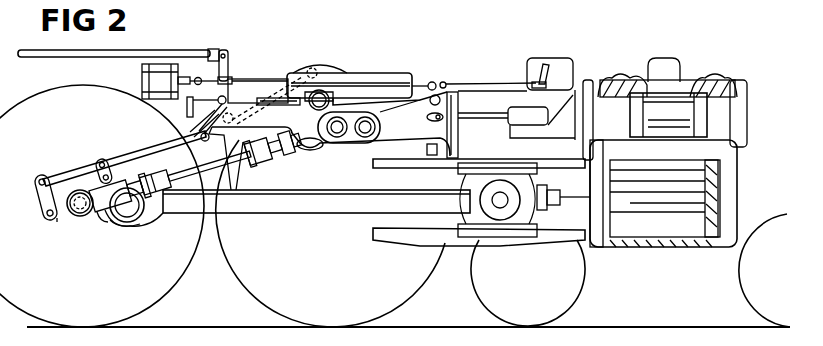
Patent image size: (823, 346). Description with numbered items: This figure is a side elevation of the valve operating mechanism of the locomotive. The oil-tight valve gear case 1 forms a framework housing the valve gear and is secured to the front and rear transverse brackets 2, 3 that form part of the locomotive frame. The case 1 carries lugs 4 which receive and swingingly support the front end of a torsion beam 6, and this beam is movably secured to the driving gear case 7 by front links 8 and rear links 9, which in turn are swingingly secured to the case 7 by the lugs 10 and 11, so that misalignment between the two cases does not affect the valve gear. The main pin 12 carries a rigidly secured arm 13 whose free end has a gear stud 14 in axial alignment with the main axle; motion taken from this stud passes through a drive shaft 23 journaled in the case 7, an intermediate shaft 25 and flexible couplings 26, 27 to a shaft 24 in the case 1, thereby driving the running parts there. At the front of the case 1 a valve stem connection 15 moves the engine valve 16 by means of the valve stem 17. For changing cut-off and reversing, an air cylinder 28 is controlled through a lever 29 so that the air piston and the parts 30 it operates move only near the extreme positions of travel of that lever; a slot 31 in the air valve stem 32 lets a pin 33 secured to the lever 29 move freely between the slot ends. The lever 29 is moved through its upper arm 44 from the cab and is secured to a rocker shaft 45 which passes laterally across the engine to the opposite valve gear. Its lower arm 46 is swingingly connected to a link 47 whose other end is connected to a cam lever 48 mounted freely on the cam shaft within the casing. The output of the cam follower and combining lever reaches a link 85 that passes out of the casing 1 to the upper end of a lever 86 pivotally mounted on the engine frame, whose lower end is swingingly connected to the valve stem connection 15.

The valve gear case 1 is at (364, 144).
The front transverse bracket 2 is at (460, 106).
The rear transverse bracket 3 is at (170, 119).
The lugs 4 is at (214, 142).
The torsion beam 6 is at (127, 154).
The driving gear case 7 is at (105, 222).
The front links 8 is at (99, 160).
The rear links 9 is at (42, 197).
The lug 10 is at (97, 182).
The lug 11 is at (57, 221).
The main pin 12 is at (129, 220).
The arm 13 is at (101, 226).
The gear stud 14 is at (75, 220).
The valve stem connection 15 is at (488, 118).
The engine valve 16 is at (677, 107).
The valve stem 17 is at (553, 113).
The drive shaft 23 is at (137, 184).
The shaft 24 is at (285, 153).
The intermediate shaft 25 is at (211, 179).
The flexible coupling 26 is at (258, 161).
The flexible coupling 27 is at (165, 176).
The air cylinder 28 is at (143, 74).
The lever 29 is at (240, 92).
The parts operated by the air piston 30 is at (277, 78).
The slot 31 is at (250, 79).
The air valve stem 32 is at (199, 78).
The pin 33 is at (232, 75).
The upper arm 44 is at (226, 57).
The rocker shaft 45 is at (220, 103).
The lower arm 46 is at (209, 137).
The link 47 is at (247, 112).
The cam lever 48 is at (333, 81).
The link 85 is at (429, 82).
The lever 86 is at (428, 119).